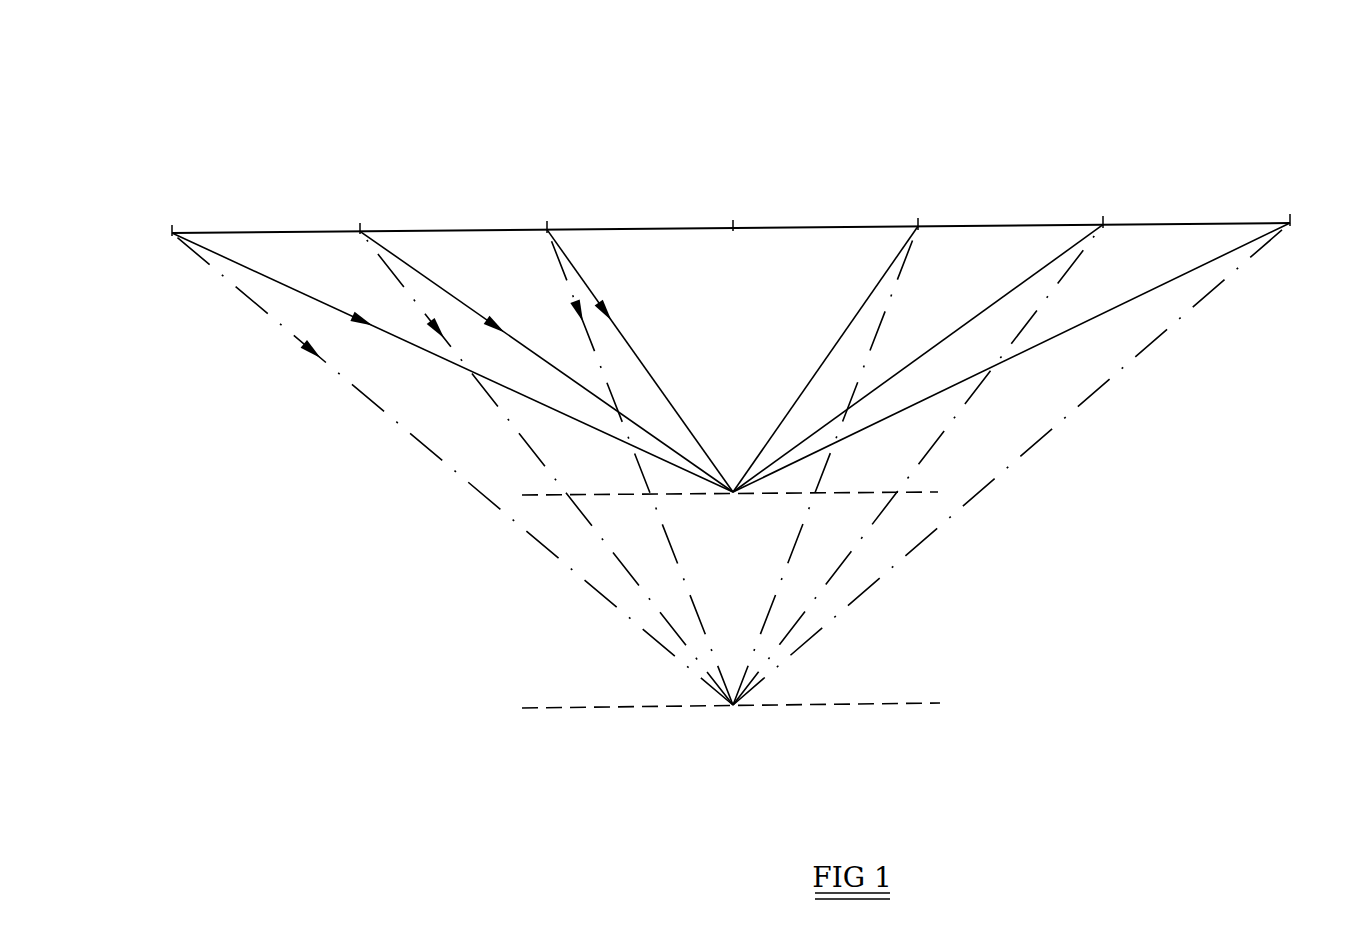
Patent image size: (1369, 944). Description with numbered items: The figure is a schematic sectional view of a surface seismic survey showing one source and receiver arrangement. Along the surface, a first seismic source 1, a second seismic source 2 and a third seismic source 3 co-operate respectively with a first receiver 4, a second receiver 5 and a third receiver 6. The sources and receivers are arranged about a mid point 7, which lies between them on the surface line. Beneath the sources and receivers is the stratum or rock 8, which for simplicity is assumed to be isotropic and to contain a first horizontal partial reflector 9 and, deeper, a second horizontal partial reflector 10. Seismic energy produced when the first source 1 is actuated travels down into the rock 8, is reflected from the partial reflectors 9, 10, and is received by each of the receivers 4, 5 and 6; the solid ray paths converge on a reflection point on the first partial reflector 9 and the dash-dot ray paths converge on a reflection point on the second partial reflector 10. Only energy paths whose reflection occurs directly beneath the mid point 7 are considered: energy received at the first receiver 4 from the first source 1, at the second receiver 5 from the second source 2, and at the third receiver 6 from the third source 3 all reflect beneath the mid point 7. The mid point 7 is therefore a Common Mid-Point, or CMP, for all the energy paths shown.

The first seismic source 1 is at (547, 230).
The second seismic source 2 is at (360, 231).
The third seismic source 3 is at (172, 233).
The first receiver 4 is at (918, 226).
The second receiver 5 is at (1103, 225).
The third receiver 6 is at (1290, 223).
The mid point 7 is at (733, 228).
The rock 8 is at (1150, 476).
The first horizontal partial reflector 9 is at (522, 495).
The second horizontal partial reflector 10 is at (522, 708).